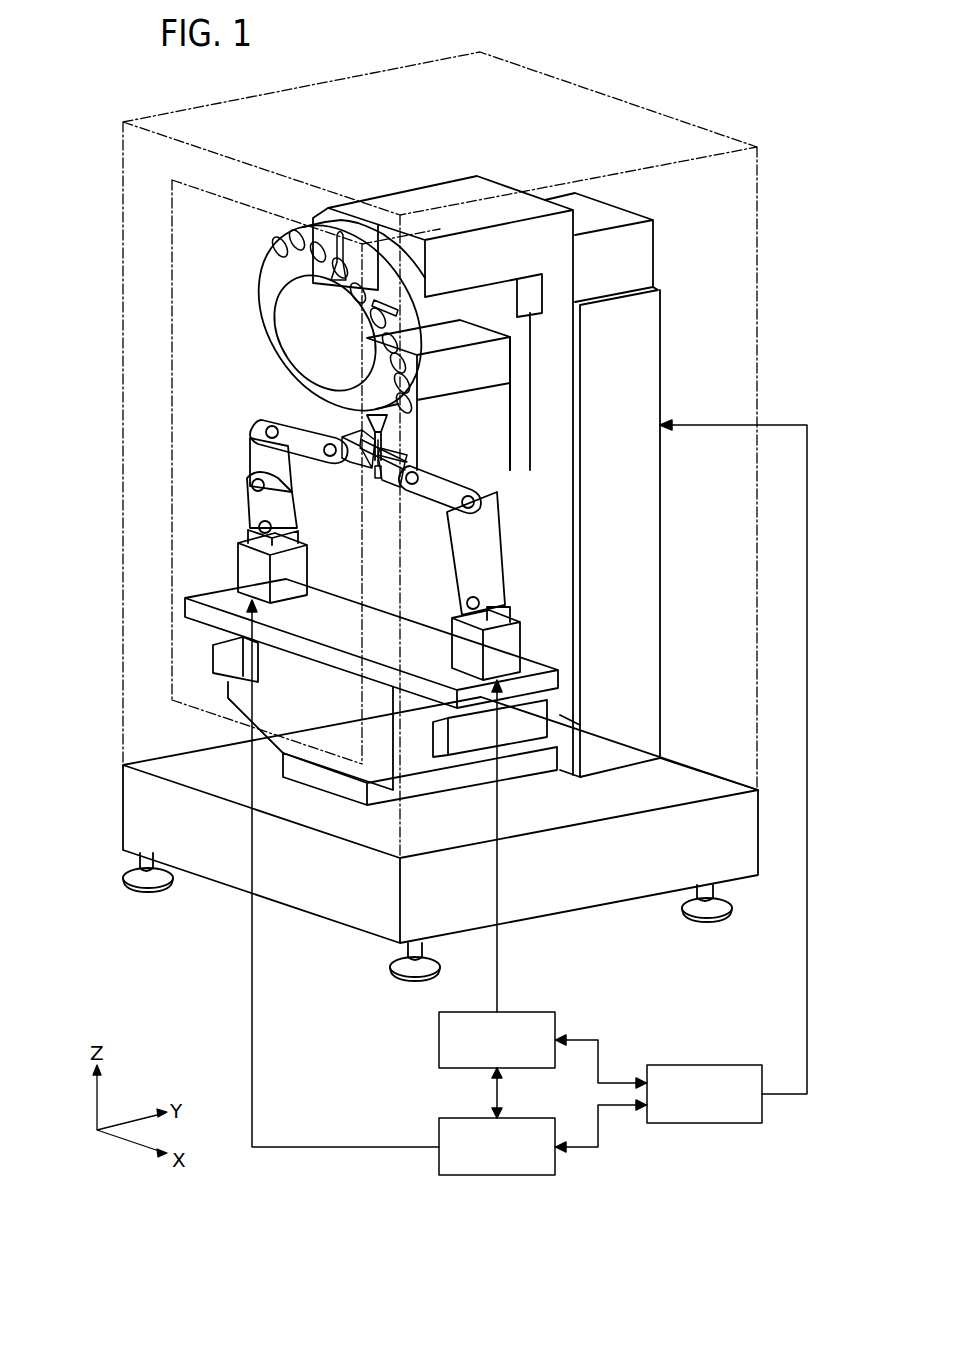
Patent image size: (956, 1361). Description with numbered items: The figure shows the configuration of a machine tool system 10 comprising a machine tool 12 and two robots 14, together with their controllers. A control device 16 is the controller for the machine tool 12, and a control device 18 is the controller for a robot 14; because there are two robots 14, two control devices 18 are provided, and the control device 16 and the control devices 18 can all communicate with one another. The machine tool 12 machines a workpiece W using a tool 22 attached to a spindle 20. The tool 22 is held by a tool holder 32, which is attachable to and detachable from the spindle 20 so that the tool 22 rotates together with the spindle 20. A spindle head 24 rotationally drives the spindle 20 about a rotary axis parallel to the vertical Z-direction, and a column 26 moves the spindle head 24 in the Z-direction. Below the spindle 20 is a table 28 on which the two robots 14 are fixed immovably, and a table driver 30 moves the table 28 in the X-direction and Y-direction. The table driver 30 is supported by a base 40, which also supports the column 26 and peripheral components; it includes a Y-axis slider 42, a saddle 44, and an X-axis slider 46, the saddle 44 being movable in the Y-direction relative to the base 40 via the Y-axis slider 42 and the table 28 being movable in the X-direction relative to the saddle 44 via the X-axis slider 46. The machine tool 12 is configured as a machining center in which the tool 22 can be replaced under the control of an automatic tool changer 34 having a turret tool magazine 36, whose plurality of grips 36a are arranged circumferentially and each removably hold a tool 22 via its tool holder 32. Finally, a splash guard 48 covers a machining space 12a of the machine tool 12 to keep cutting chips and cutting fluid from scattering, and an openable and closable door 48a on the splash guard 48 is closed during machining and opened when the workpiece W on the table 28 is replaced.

The machine tool system 10 is at (606, 34).
The machine tool 12 is at (648, 104).
The machining space 12a is at (168, 150).
The robot 14 is at (262, 446).
The control device 16 is at (687, 1064).
The control device 18 is at (439, 1040).
The spindle 20 is at (402, 423).
The tool 22 is at (340, 235).
The spindle head 24 is at (485, 385).
The column 26 is at (555, 366).
The table 28 is at (316, 652).
The table driver 30 is at (196, 646).
The tool holder 32 is at (333, 332).
The automatic tool changer 34 is at (258, 326).
The tool magazine 36 is at (280, 366).
The grip 36a is at (430, 330).
The base 40 is at (300, 890).
The Y-axis slider 42 is at (343, 792).
The saddle 44 is at (415, 765).
The X-axis slider 46 is at (462, 740).
The splash guard 48 is at (123, 147).
The door 48a is at (172, 305).
The workpiece W is at (376, 482).